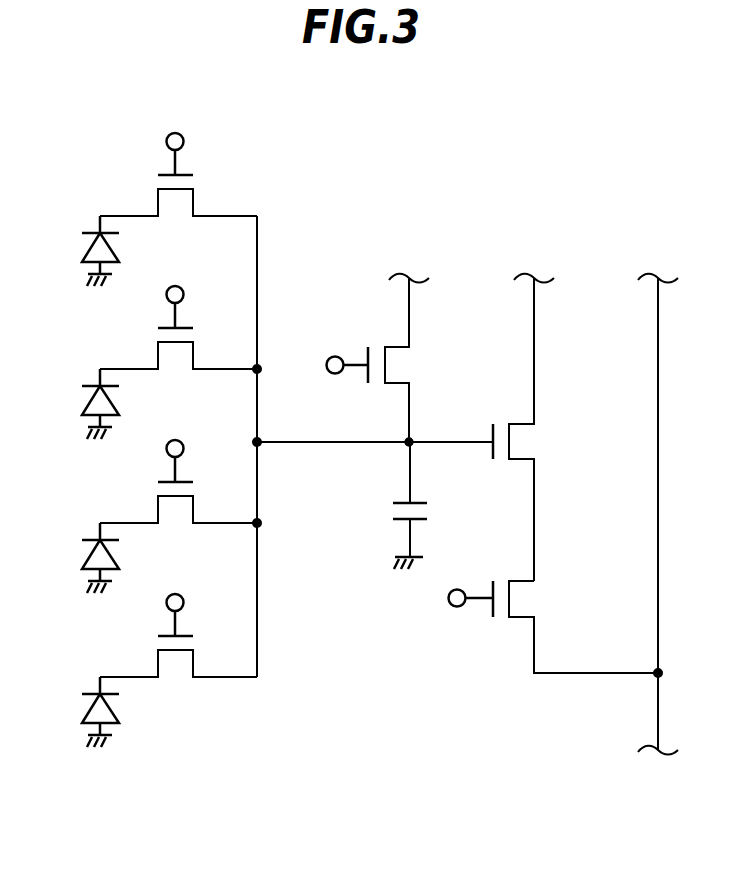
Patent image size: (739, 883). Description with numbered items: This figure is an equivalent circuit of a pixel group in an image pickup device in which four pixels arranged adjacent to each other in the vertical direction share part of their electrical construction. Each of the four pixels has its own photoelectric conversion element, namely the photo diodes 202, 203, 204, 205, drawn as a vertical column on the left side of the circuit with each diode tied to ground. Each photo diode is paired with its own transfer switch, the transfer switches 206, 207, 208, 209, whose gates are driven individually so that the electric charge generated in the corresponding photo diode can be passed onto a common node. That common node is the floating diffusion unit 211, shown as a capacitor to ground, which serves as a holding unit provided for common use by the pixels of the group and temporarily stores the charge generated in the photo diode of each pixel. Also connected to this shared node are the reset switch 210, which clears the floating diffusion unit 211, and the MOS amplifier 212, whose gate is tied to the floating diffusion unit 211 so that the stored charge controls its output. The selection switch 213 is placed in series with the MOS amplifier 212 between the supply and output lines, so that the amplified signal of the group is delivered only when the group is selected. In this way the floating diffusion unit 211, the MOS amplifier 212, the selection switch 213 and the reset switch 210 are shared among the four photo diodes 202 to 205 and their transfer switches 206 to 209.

The photo diode 202 is at (93, 230).
The photo diode 203 is at (93, 383).
The photo diode 204 is at (93, 536).
The photo diode 205 is at (93, 691).
The transfer switch 206 is at (187, 174).
The transfer switch 207 is at (187, 327).
The transfer switch 208 is at (187, 481).
The transfer switch 209 is at (187, 634).
The reset switch 210 is at (368, 348).
The floating diffusion unit 211 is at (393, 519).
The MOS amplifier 212 is at (490, 450).
The selection switch 213 is at (490, 610).